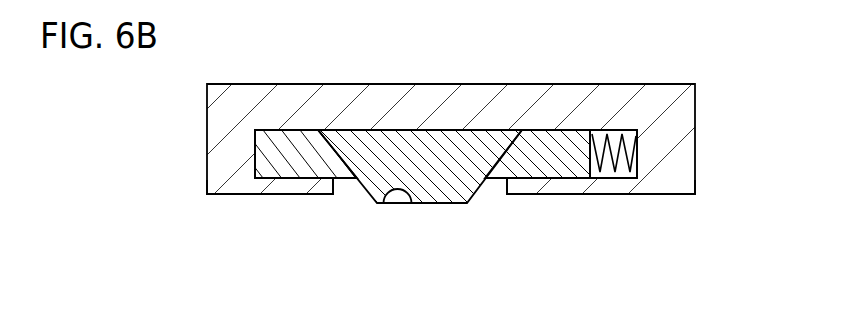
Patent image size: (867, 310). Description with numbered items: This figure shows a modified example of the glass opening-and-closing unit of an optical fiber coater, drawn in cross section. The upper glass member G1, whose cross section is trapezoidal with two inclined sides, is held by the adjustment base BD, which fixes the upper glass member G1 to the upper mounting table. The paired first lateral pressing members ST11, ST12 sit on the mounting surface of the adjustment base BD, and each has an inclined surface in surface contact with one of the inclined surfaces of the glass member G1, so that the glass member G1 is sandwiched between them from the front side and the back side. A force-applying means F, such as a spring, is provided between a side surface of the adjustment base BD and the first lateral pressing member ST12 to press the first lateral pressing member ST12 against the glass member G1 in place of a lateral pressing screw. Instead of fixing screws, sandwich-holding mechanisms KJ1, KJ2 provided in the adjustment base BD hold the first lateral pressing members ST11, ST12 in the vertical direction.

The adjustment base BD is at (697, 117).
The sandwich-holding mechanism KJ1 is at (268, 194).
The sandwich-holding mechanism KJ2 is at (570, 195).
The first lateral pressing member ST11 is at (322, 172).
The first lateral pressing member ST12 is at (524, 172).
The upper glass member G1 is at (435, 192).
The force-applying means F is at (613, 175).